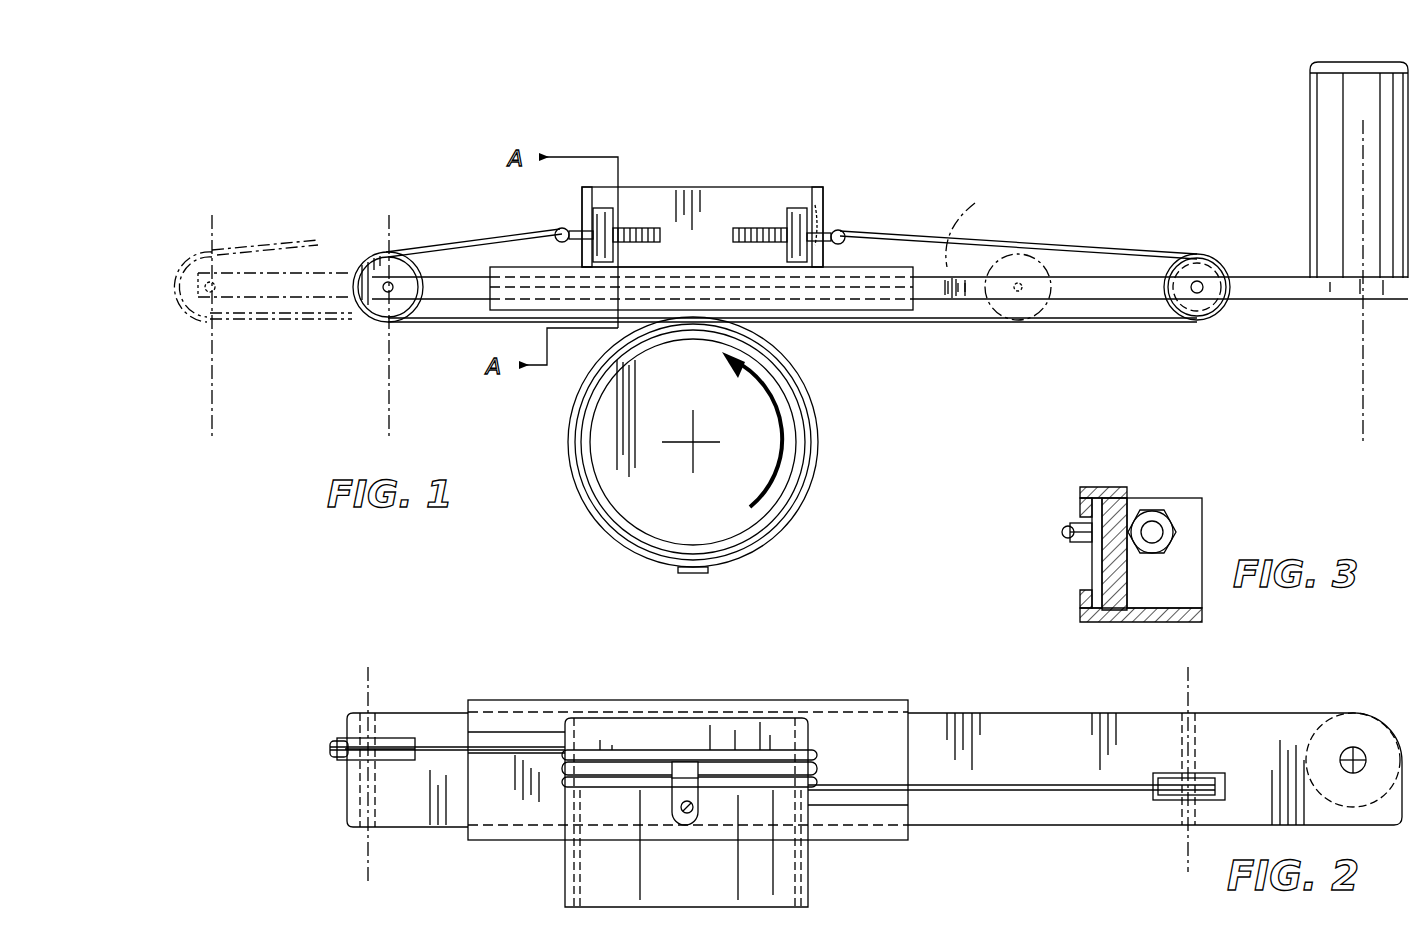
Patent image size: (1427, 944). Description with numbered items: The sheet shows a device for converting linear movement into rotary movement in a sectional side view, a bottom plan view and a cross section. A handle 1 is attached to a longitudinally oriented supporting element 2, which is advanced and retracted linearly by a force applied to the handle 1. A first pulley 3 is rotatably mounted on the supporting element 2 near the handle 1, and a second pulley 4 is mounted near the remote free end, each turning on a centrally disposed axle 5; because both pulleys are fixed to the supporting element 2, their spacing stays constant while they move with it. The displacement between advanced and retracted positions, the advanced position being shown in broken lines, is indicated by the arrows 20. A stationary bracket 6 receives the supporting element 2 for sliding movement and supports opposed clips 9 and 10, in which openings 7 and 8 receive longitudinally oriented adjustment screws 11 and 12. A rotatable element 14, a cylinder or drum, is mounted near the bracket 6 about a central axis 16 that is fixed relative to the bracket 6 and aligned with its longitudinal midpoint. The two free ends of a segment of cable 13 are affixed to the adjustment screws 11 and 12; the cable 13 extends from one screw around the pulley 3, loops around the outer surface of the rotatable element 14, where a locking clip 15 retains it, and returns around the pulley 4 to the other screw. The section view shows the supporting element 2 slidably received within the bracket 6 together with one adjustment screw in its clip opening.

In FIG. 1, the handle 1 is at (1317, 153).
In FIG. 1, the supporting element 2 is at (1250, 277).
In FIG. 3, the supporting element 2 is at (1092, 560).
In FIG. 2, the supporting element 2 is at (1010, 712).
In FIG. 1, the first pulley 3 is at (1205, 256).
In FIG. 2, the first pulley 3 is at (1205, 775).
In FIG. 1, the second pulley 4 is at (213, 252).
In FIG. 2, the second pulley 4 is at (388, 762).
In FIG. 1, the axle 5 is at (384, 283).
In FIG. 2, the axle 5 is at (368, 740).
In FIG. 1, the bracket 6 is at (864, 267).
In FIG. 3, the bracket 6 is at (1195, 556).
In FIG. 2, the bracket 6 is at (862, 840).
In FIG. 1, the opening 7 is at (823, 205).
In FIG. 1, the opening 8 is at (580, 222).
In FIG. 1, the clip 9 is at (815, 210).
In FIG. 1, the clip 10 is at (582, 192).
In FIG. 1, the adjustment screw 11 is at (752, 230).
In FIG. 1, the adjustment screw 12 is at (643, 230).
In FIG. 1, the cable 13 is at (300, 240).
In FIG. 3, the cable 13 is at (1066, 530).
In FIG. 2, the cable 13 is at (612, 757).
In FIG. 1, the rotatable element 14 is at (800, 457).
In FIG. 2, the rotatable element 14 is at (800, 718).
In FIG. 1, the clip 15 is at (697, 573).
In FIG. 2, the clip 15 is at (695, 768).
In FIG. 1, the central axis 16 is at (693, 442).
In FIG. 1, the arrows 20 is at (387, 412).